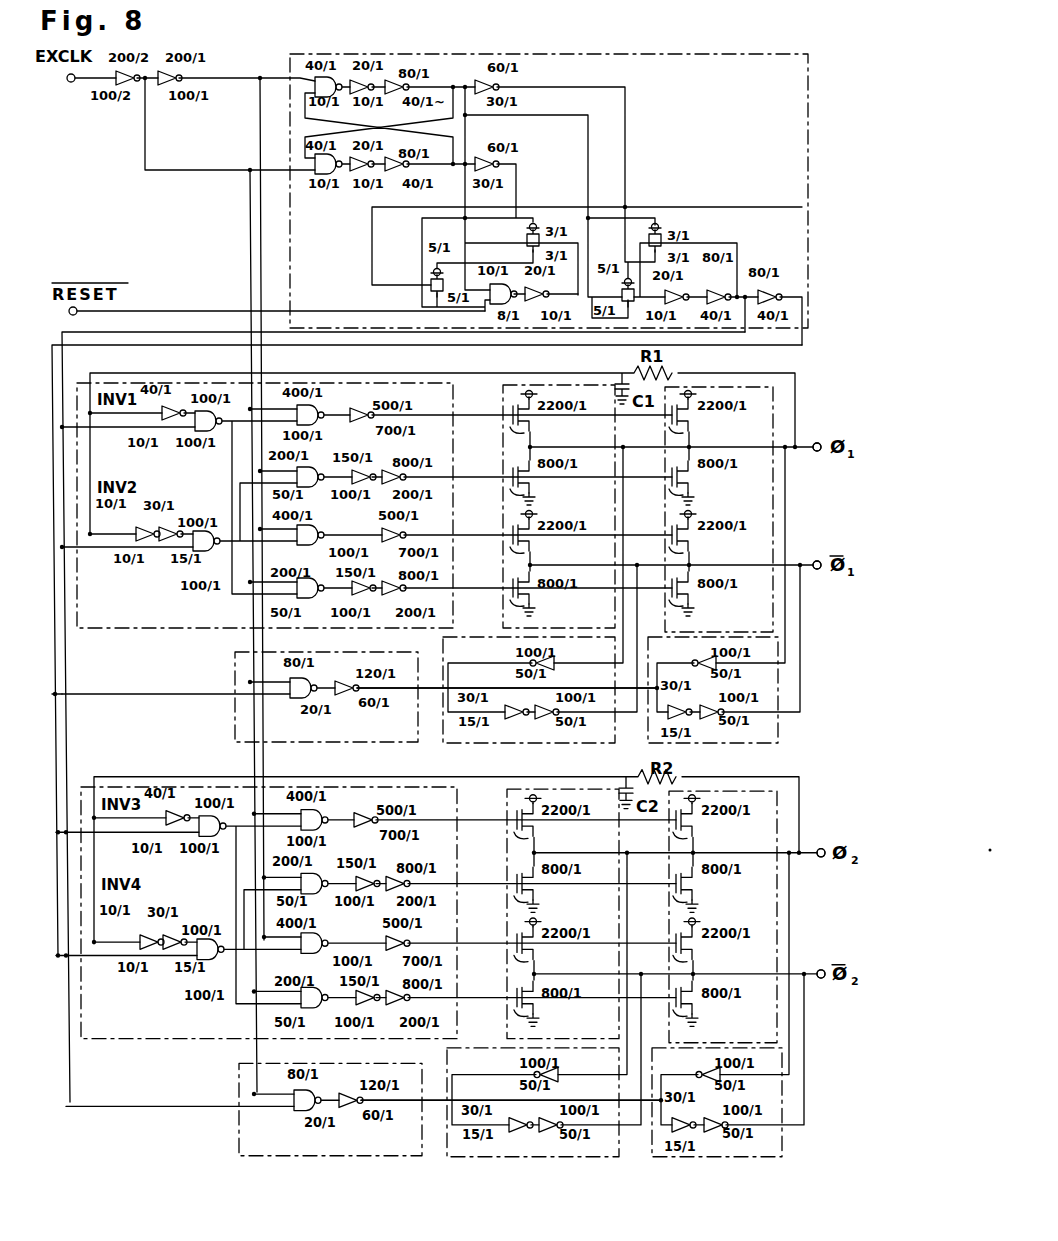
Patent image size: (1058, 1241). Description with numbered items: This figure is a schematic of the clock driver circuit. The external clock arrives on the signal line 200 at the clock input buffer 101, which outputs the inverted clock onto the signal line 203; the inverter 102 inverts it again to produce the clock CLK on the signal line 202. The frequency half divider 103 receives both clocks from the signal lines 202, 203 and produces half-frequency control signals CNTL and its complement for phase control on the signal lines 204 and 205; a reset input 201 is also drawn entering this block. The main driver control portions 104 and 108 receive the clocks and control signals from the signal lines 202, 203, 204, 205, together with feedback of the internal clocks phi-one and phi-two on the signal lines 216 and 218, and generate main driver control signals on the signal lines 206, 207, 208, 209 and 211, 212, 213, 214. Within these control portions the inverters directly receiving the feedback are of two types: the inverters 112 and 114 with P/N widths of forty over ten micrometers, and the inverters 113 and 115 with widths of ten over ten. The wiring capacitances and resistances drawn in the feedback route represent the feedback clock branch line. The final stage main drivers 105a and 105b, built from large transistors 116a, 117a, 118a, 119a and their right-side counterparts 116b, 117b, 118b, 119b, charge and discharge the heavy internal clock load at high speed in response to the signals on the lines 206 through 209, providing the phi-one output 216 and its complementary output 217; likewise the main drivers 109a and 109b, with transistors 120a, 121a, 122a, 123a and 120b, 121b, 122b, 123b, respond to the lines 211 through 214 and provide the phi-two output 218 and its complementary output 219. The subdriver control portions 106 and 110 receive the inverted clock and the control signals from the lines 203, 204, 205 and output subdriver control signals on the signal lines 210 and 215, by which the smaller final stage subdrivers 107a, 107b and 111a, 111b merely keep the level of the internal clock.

The clock input buffer 101 is at (140, 86).
The inverter 102 is at (163, 86).
The frequency 1/2 divider 103 is at (632, 54).
The main driver control portion 104 is at (122, 628).
The final stage main driver 105a is at (612, 512).
The final stage main driver 105b is at (775, 512).
The subdriver control portion 106 is at (235, 679).
The final stage subdriver 107a is at (606, 743).
The final stage subdriver 107b is at (665, 745).
The main driver control portion 108 is at (269, 932).
The final stage main driver 109a is at (554, 893).
The final stage main driver 109b is at (758, 917).
The subdriver control portion 110 is at (288, 1109).
The final stage subdriver 111a is at (546, 1119).
The final stage subdriver 111b is at (755, 1102).
The inverter INV1 112 is at (128, 427).
The inverter INV2 113 is at (128, 548).
The inverter INV3 114 is at (189, 849).
The inverter INV4 115 is at (169, 968).
The large size transistor 116a is at (539, 434).
The large size transistor 117a is at (539, 494).
The large size transistor 118a is at (539, 552).
The large size transistor 119a is at (539, 615).
The P-channel transistor 116b is at (698, 434).
The N-channel transistor 117b is at (698, 494).
The P-channel transistor 118b is at (698, 552).
The N-channel transistor 119b is at (698, 615).
The large size transistor 120a is at (551, 821).
The large size transistor 121a is at (551, 889).
The large size transistor 122a is at (551, 943).
The large size transistor 123a is at (552, 1007).
The P-channel transistor 120b is at (710, 821).
The N-channel transistor 121b is at (710, 889).
The P-channel transistor 122b is at (710, 943).
The N-channel transistor 123b is at (698, 1016).
The signal line 200 is at (75, 86).
The reset input terminal 201 is at (148, 307).
The signal line 202 is at (260, 208).
The signal line 203 is at (250, 245).
The signal line 204 is at (462, 333).
The signal line 205 is at (304, 337).
The signal line 206 is at (478, 418).
The signal line 207 is at (478, 480).
The signal line 208 is at (478, 538).
The signal line 209 is at (478, 591).
The signal line 210 is at (423, 676).
The signal line 211 is at (526, 842).
The signal line 212 is at (542, 906).
The signal line 213 is at (542, 966).
The signal line 214 is at (542, 1019).
The signal line 215 is at (511, 1071).
The signal line 216 is at (820, 442).
The inverted clock output terminal phi1 217 is at (825, 572).
The signal line 218 is at (814, 874).
The inverted clock output terminal phi2 219 is at (826, 995).